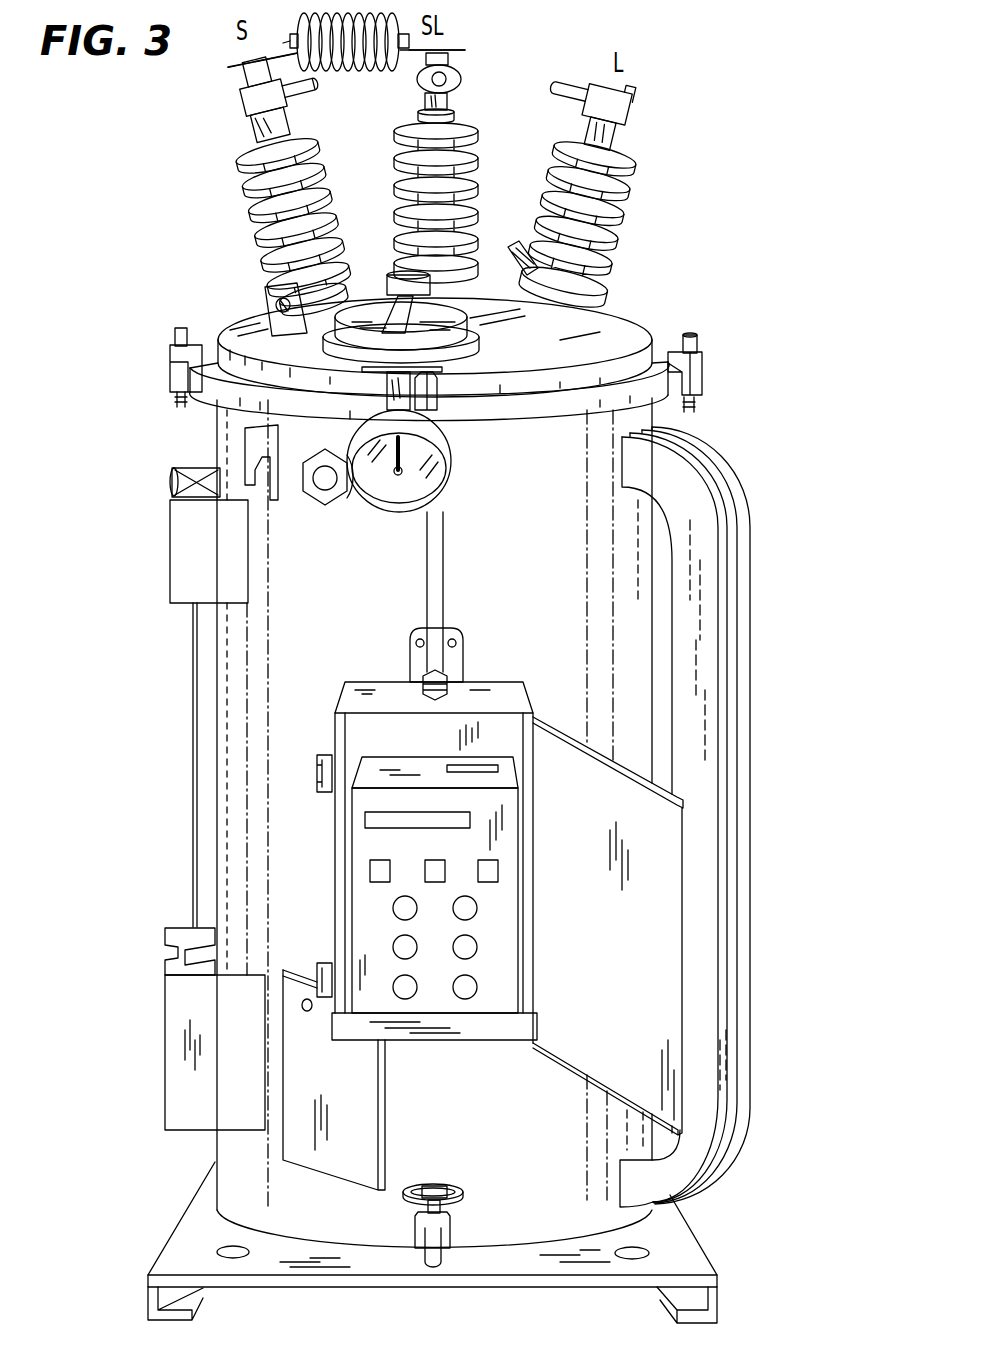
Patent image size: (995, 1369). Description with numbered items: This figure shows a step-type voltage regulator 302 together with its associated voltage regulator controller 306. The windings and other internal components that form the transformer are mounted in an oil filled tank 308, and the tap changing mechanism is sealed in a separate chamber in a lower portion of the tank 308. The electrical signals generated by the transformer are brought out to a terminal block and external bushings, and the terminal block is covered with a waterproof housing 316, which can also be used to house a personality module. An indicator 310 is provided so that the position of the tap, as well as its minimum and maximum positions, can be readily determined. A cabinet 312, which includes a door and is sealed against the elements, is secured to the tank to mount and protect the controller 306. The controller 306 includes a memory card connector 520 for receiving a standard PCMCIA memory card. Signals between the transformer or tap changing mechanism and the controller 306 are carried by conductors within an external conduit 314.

The step-type voltage regulator 302 is at (213, 1190).
The voltage regulator controller 306 is at (370, 916).
The oil filled tank 308 is at (235, 720).
The indicator 310 is at (373, 503).
The cabinet 312 is at (330, 736).
The external conduit 314 is at (440, 555).
The waterproof housing 316 is at (545, 328).
The memory card connector 520 is at (487, 767).